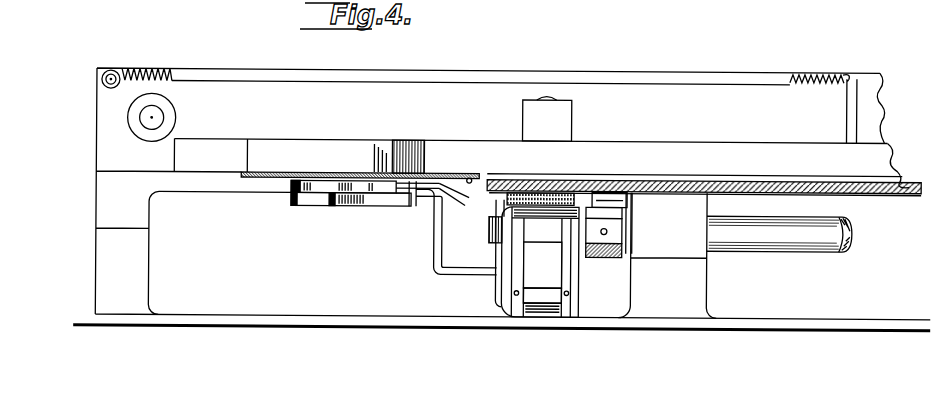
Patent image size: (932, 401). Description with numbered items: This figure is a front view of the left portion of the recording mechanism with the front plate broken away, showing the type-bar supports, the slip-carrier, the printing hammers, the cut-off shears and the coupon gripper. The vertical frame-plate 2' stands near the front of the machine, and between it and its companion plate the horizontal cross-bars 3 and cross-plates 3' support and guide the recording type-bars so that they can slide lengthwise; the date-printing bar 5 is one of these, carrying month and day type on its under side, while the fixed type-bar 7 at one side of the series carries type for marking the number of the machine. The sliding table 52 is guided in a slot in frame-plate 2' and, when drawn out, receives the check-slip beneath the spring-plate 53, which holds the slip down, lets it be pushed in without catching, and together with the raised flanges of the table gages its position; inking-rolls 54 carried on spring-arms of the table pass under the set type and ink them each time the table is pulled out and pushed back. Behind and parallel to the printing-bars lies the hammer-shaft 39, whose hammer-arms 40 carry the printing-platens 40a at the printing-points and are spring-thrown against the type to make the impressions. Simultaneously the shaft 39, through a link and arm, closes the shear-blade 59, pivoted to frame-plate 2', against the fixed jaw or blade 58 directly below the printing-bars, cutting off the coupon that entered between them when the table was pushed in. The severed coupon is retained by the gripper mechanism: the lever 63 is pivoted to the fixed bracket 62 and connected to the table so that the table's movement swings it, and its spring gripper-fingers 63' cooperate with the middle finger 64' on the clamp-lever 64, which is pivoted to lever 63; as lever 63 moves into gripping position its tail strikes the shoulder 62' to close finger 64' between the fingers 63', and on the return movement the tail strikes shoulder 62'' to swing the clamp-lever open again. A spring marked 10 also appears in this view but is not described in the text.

The vertical frame-plate 2' is at (481, 66).
The spring 10 is at (170, 67).
The fixed type-bar 7 is at (694, 142).
The horizontal cross-bar 3 is at (558, 118).
The cross-plate 3' is at (360, 147).
The date-printing bar 5 is at (391, 168).
The gripper lever 63 is at (419, 147).
The clamp-lever 64 is at (418, 168).
The spring gripper-fingers 63' is at (462, 172).
The gripper-finger 64' is at (459, 203).
The fixed bracket 62 is at (343, 207).
The shoulder 62'' is at (351, 221).
The shoulder 62' is at (449, 228).
The spring-plate 53 is at (783, 176).
The sliding table 52 is at (858, 188).
The inking-roll 54 is at (566, 188).
The fixed jaw or blade 58 is at (619, 191).
The shear-blade 59 is at (607, 251).
The hammer-arm 40 is at (514, 268).
The printing-platen 40a is at (555, 268).
The hammer-shaft 39 is at (767, 243).